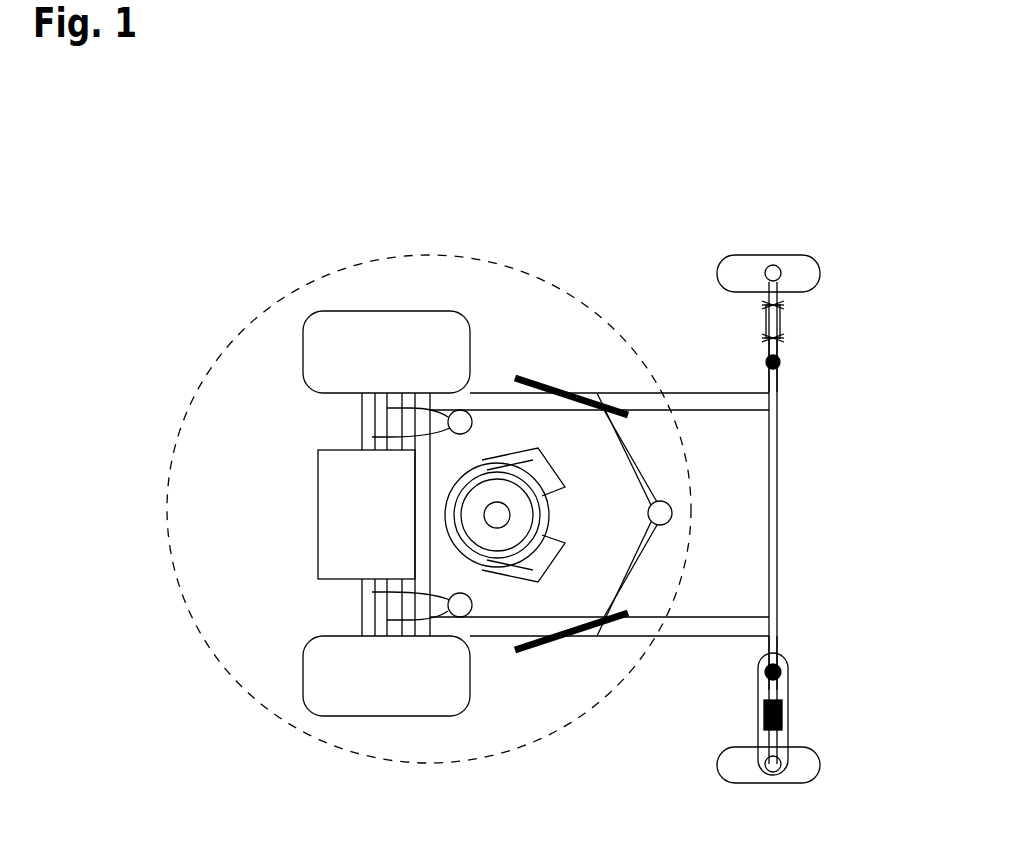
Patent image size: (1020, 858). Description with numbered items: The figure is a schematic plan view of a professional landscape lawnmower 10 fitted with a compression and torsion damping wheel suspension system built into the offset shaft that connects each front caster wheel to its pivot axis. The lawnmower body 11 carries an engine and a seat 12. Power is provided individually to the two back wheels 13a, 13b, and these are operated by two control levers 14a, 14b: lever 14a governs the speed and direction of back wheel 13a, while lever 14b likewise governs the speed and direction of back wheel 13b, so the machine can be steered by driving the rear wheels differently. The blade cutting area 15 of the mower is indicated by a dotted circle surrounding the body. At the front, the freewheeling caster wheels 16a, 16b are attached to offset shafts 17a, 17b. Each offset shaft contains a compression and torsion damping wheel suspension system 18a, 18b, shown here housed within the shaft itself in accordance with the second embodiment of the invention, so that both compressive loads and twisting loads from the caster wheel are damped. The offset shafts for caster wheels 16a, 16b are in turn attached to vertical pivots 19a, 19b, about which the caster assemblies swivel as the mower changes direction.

The professional landscape lawnmower 10 is at (512, 208).
The lawnmower body 11 is at (327, 515).
The engine and seat 12 is at (497, 515).
The back wheel 13a is at (335, 690).
The back wheel 13b is at (325, 358).
The control lever 14a is at (520, 650).
The control lever 14b is at (520, 378).
The blade cutting area 15 is at (413, 762).
The front wheel 16a is at (797, 762).
The front wheel 16b is at (795, 275).
The offset shaft 17a is at (782, 693).
The offset shaft 17b is at (780, 356).
The compression and torsion damping wheel suspension system 18a is at (796, 716).
The compression and torsion damping wheel suspension system 18b is at (796, 320).
The vertical pivot 19a is at (780, 668).
The vertical pivot 19b is at (782, 368).